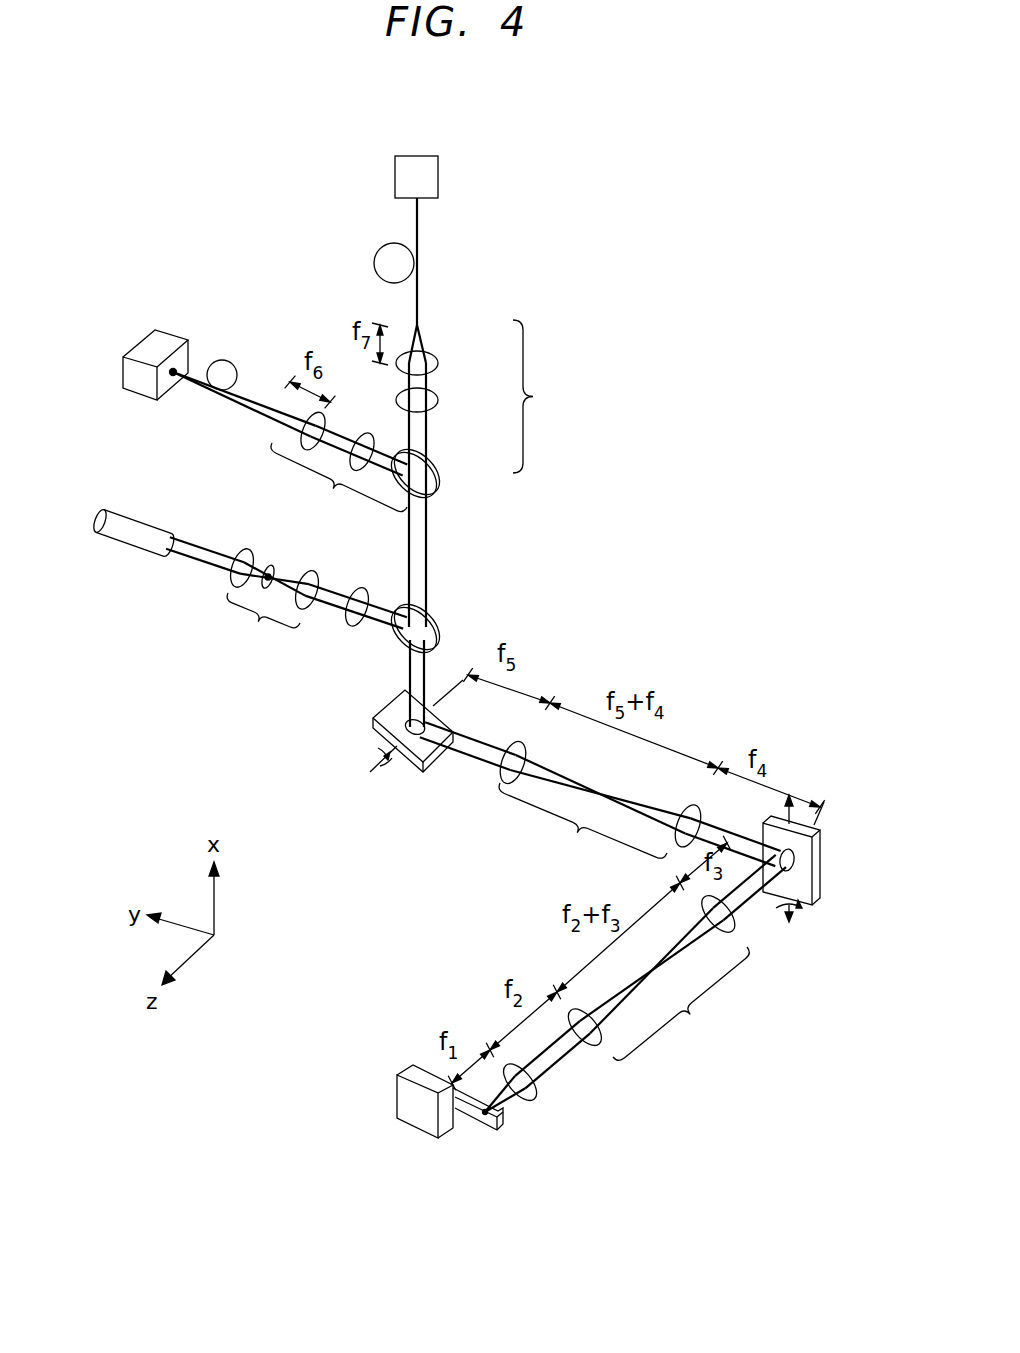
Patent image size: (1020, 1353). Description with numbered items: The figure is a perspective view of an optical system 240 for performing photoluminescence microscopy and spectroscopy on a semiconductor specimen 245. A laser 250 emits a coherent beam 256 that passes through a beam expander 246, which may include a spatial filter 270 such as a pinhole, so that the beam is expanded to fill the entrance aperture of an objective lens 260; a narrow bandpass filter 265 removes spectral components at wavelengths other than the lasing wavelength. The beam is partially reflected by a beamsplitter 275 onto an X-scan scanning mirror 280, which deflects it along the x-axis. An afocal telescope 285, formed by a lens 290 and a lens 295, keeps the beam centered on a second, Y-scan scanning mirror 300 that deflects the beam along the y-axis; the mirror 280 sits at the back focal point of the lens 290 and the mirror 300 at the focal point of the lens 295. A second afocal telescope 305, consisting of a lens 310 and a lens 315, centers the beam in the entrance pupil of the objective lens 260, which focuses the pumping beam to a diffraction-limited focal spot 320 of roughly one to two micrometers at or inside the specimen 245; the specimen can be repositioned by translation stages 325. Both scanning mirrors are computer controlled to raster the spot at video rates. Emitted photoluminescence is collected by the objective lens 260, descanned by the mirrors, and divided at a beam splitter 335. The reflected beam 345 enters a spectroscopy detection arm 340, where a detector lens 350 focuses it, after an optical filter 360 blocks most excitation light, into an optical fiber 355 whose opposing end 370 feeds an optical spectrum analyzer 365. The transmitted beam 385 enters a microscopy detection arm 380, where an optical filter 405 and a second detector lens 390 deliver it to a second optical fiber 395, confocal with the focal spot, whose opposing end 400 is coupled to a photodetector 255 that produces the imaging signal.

The optical system 240 is at (473, 78).
The semiconductor specimen 245 is at (498, 1134).
The beam expander 246 is at (274, 606).
The laser 250 is at (128, 548).
The photodetector 255 is at (438, 180).
The coherent beam 256 is at (206, 548).
The objective lens 260 is at (535, 1100).
The narrow bandpass filter 265 is at (350, 628).
The spatial filter 270 is at (270, 565).
The beamsplitter 275 is at (445, 622).
The scanning mirror (X-scan) 280 is at (418, 766).
The afocal telescope 285 is at (595, 815).
The lens 290 is at (500, 782).
The lens 295 is at (682, 806).
The scanning mirror (Y-scan) 300 is at (822, 868).
The second afocal telescope 305 is at (665, 984).
The lens 310 is at (738, 934).
The lens 315 is at (597, 1048).
The focal spot 320 is at (472, 1114).
The translation stages 325 is at (396, 1087).
The beam splitter 335 is at (438, 494).
The spectroscopy detection arm 340 is at (339, 486).
The beam 345 is at (380, 476).
The detector lens 350 is at (302, 448).
The optical fiber 355 is at (221, 391).
The optical filter 360 is at (365, 433).
The optical spectrum analyzer 365 is at (162, 335).
The opposing end 370 is at (173, 376).
The microscopy detection arm 380 is at (543, 396).
The transmitted beam 385 is at (427, 445).
The second detector lens 390 is at (438, 363).
The second optical fiber 395 is at (378, 257).
The opposing end 400 is at (420, 202).
The optical filter 405 is at (438, 400).